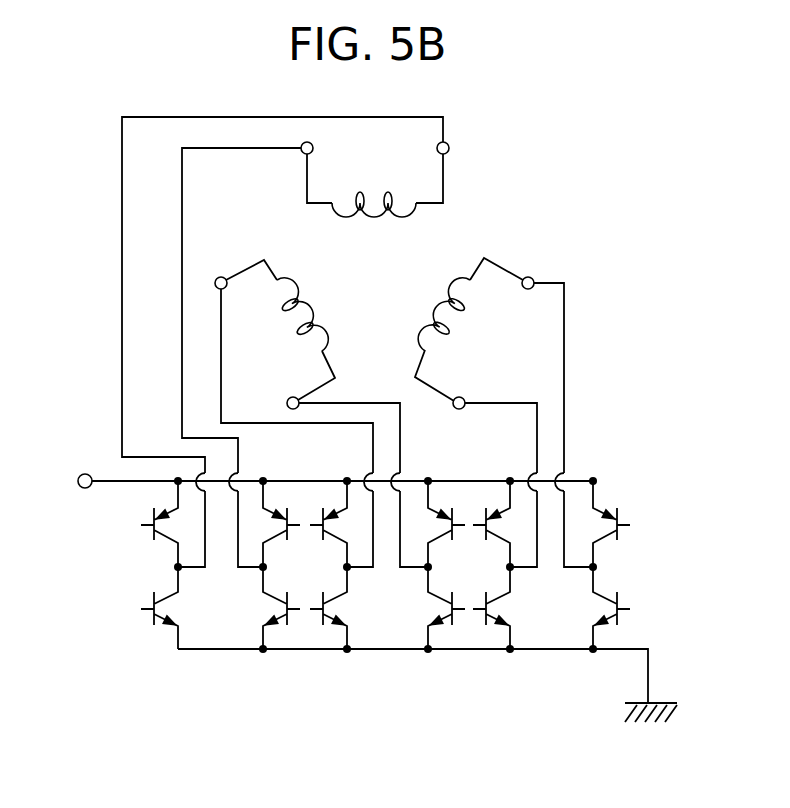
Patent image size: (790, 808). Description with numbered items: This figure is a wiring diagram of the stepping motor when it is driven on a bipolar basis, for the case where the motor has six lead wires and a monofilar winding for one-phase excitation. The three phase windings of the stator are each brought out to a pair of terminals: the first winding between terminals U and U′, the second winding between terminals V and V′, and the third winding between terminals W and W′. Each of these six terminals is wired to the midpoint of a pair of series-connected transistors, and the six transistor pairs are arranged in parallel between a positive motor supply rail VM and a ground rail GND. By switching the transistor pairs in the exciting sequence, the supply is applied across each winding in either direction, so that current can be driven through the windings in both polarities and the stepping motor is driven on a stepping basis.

The motor winding terminal U is at (452, 150).
The motor winding terminal U prime U′ is at (319, 150).
The motor winding terminal V is at (216, 273).
The motor winding terminal V prime V′ is at (282, 398).
The motor winding terminal W is at (464, 391).
The motor winding terminal W prime W′ is at (530, 270).
The motor supply voltage + VM is at (320, 467).
The ground GND is at (439, 685).